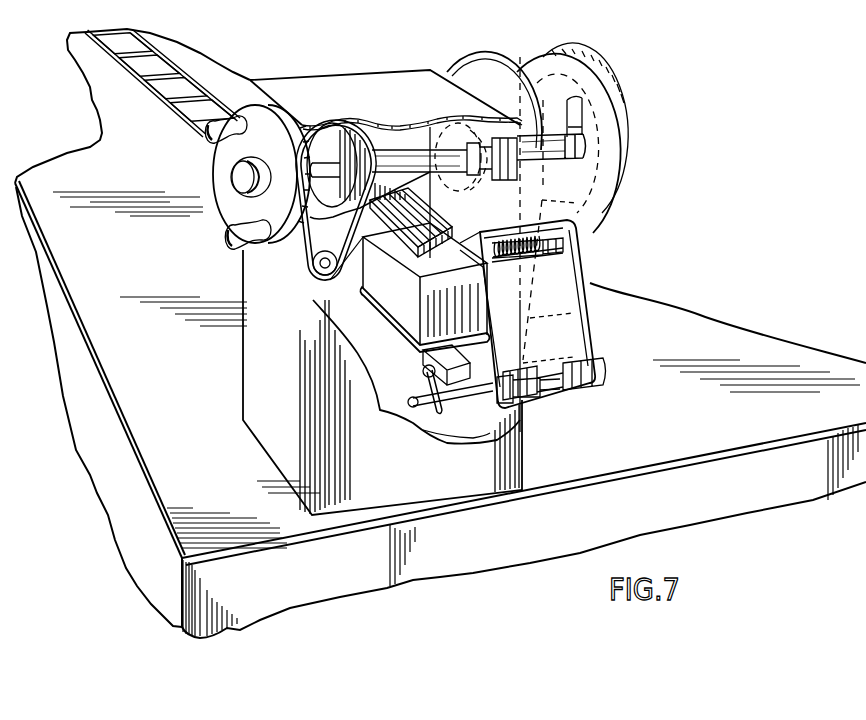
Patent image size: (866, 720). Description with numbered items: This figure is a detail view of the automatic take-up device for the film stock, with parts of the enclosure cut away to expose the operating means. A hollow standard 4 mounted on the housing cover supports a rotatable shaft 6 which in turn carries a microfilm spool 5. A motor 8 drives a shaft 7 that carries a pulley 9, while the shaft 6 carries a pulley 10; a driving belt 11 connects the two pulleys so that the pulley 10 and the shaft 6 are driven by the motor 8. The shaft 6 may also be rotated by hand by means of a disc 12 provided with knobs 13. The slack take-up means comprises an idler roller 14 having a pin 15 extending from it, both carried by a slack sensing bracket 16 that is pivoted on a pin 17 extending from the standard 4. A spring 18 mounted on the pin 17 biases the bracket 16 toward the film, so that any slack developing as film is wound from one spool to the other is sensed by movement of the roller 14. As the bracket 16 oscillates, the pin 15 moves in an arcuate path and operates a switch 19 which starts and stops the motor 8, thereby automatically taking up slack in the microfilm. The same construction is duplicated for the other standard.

The hollow standard 4 is at (340, 87).
The microfilm spool 5 is at (612, 138).
The shaft 6 is at (403, 157).
The shaft 7 is at (317, 262).
The motor 8 is at (377, 275).
The pulley 9 is at (308, 278).
The pulley 10 is at (328, 137).
The driving belt 11 is at (307, 207).
The disc 12 is at (218, 163).
The knobs 13 is at (205, 132).
The idler roller 14 is at (560, 392).
The pin 15 is at (408, 398).
The slack sensing bracket 16 is at (577, 330).
The pin 17 is at (567, 247).
The spring 18 is at (548, 260).
The switch 19 is at (433, 360).